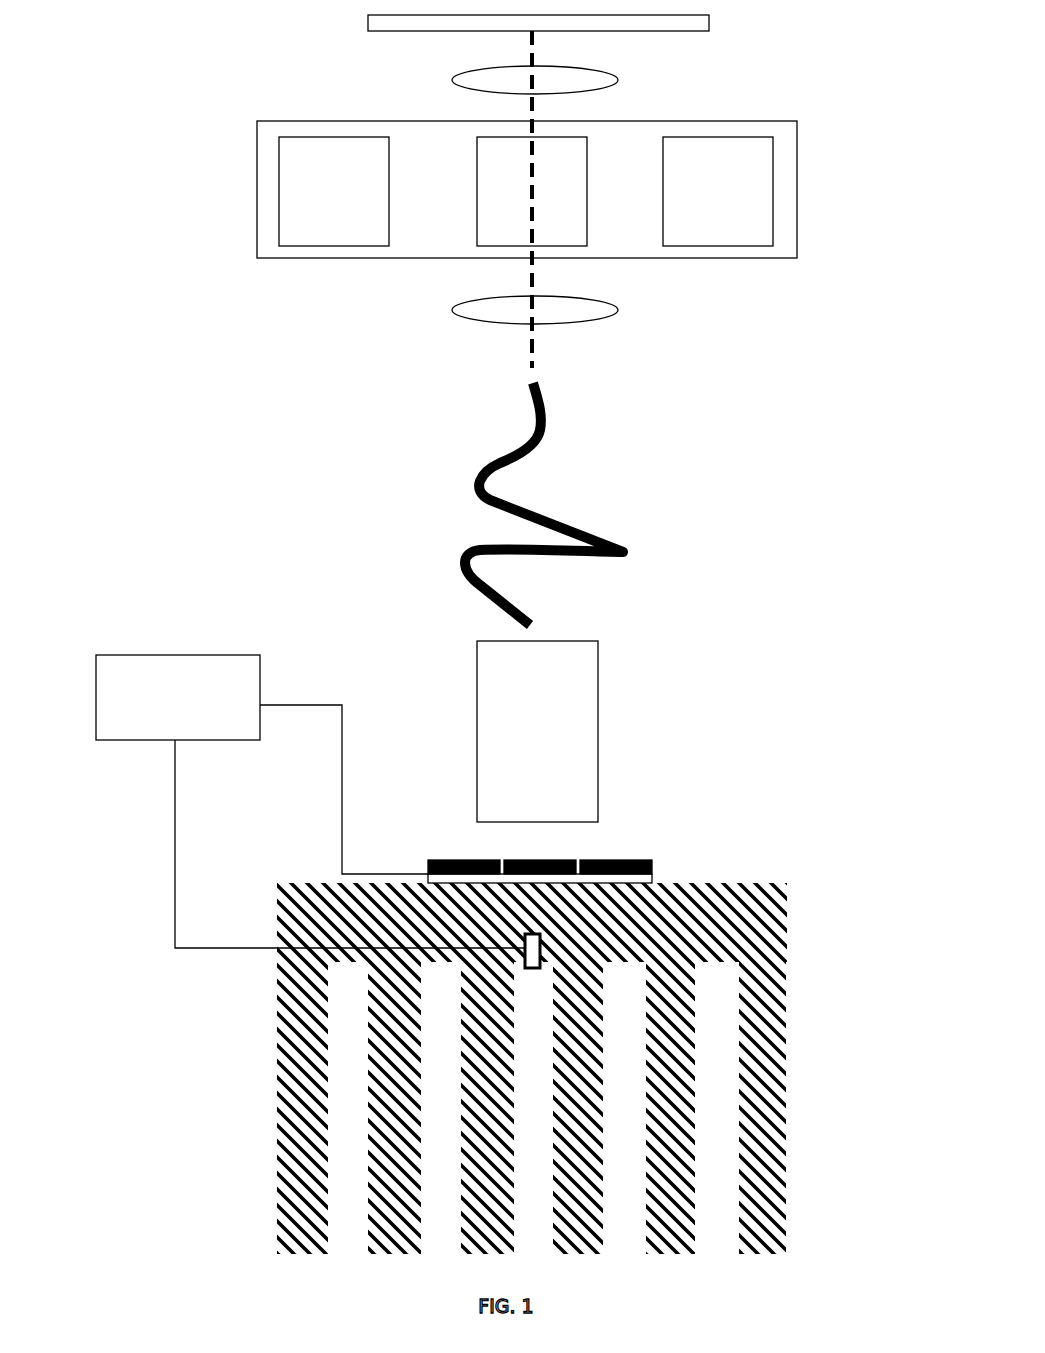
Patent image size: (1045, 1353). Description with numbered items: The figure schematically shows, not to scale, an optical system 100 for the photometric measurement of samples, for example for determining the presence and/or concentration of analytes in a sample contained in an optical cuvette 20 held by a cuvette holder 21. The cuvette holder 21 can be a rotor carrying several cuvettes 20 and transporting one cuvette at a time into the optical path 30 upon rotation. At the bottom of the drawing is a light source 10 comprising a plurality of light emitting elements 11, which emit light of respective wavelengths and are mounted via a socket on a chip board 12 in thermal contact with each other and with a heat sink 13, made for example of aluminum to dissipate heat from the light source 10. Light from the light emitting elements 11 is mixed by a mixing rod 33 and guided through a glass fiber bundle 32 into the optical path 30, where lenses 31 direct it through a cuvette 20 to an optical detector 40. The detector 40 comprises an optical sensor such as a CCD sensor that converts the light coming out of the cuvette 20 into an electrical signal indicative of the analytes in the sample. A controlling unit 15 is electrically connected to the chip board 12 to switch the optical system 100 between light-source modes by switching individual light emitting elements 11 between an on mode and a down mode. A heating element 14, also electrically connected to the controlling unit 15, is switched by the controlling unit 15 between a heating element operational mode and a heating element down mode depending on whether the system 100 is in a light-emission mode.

The optical system 100 is at (172, 400).
The optical detector 40 is at (368, 23).
The lenses 31 is at (452, 80).
The cuvette holder 21 is at (257, 218).
The optical cuvette 20 is at (587, 213).
The optical path 30 is at (527, 340).
The glass fiber bundle 32 is at (630, 552).
The mixing rod 33 is at (598, 728).
The controlling unit 15 is at (152, 655).
The light source 10 is at (437, 838).
The light emitting elements 11 is at (602, 860).
The chip board 12 is at (655, 877).
The heat sink 13 is at (753, 883).
The heating element 14 is at (525, 968).